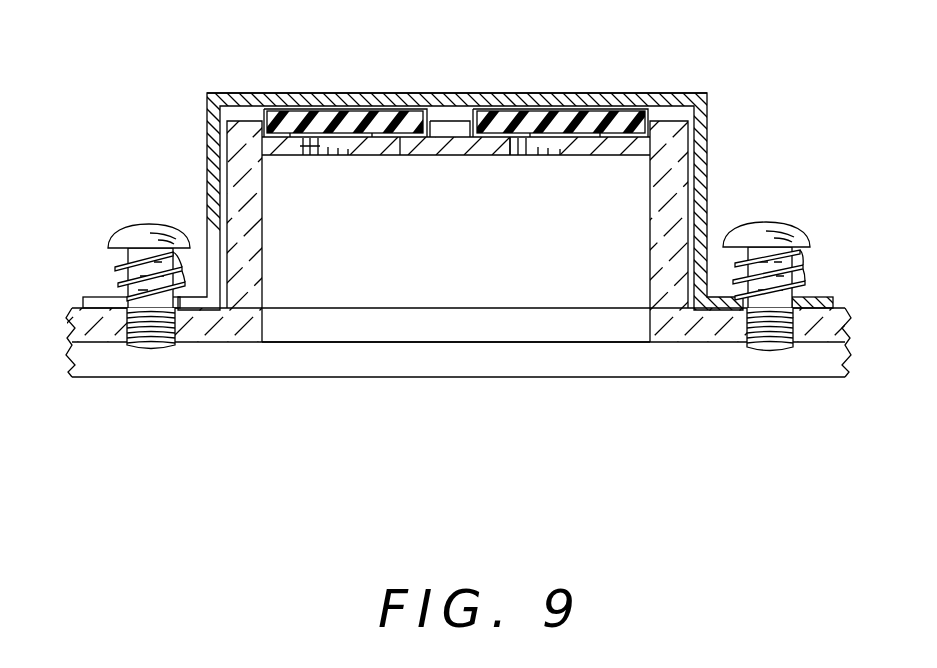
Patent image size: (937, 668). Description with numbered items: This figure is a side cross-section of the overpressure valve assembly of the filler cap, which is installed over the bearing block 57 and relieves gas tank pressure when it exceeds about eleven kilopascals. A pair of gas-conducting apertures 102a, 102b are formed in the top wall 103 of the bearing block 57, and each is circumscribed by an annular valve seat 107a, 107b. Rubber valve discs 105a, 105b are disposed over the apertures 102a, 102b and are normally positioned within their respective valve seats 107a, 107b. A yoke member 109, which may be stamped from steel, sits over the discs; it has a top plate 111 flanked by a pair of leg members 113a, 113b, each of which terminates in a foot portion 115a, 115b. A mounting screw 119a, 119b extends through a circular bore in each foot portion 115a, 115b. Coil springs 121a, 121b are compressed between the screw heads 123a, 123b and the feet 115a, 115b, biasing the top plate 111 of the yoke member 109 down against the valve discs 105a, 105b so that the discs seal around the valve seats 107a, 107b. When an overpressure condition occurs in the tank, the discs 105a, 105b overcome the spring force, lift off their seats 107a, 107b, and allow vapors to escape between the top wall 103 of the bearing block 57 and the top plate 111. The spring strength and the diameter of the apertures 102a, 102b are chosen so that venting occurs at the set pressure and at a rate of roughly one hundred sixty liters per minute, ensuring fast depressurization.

The bearing block 57 is at (472, 296).
The gas-conducting aperture 102a is at (316, 157).
The gas-conducting aperture 102b is at (597, 157).
The top wall 103 is at (457, 150).
The rubber valve disc 105a is at (372, 135).
The rubber valve disc 105b is at (530, 135).
The annular valve seat 107a is at (430, 118).
The annular valve seat 107b is at (652, 118).
The yoke member 109 is at (203, 117).
The top plate 111 is at (272, 93).
The leg member 113a is at (207, 170).
The leg member 113b is at (708, 150).
The foot portion 115a is at (100, 297).
The foot portion 115b is at (820, 297).
The mounting screw 119a is at (152, 347).
The mounting screw 119b is at (775, 348).
The coil spring 121a is at (118, 268).
The coil spring 121b is at (805, 262).
The screw head 123a is at (148, 225).
The screw head 123b is at (765, 222).